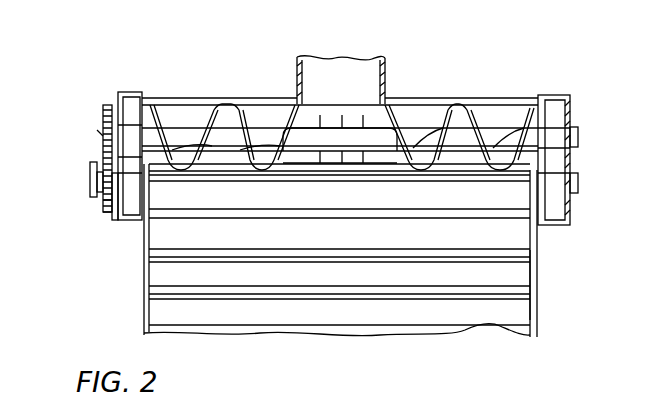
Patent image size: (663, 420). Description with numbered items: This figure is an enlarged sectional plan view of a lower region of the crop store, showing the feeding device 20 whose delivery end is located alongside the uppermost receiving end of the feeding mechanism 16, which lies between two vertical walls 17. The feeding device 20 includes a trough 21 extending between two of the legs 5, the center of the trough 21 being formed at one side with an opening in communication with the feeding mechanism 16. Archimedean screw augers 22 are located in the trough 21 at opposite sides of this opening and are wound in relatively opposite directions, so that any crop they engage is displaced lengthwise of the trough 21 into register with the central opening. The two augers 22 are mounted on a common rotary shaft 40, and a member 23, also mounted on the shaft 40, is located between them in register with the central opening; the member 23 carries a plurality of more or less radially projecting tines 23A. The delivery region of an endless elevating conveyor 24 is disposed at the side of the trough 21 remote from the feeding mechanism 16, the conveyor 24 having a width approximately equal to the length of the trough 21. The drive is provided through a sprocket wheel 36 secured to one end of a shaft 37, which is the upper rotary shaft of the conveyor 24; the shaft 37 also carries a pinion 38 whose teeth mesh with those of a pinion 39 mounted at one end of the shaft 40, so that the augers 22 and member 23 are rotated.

The legs 5 is at (135, 76).
The feeding mechanism 16 is at (361, 49).
The vertical walls 17 is at (297, 61).
The feeding device 20 is at (134, 285).
The trough 21 is at (232, 88).
The Archimedean screw augers 22 is at (152, 112).
The member 23 is at (306, 144).
The tines 23A is at (370, 114).
The endless elevating conveyor 24 is at (523, 312).
The sprocket wheel 36 is at (92, 163).
The shaft 37 is at (87, 180).
The pinion 38 is at (102, 208).
The pinion 39 is at (103, 105).
The shaft 40 is at (97, 130).